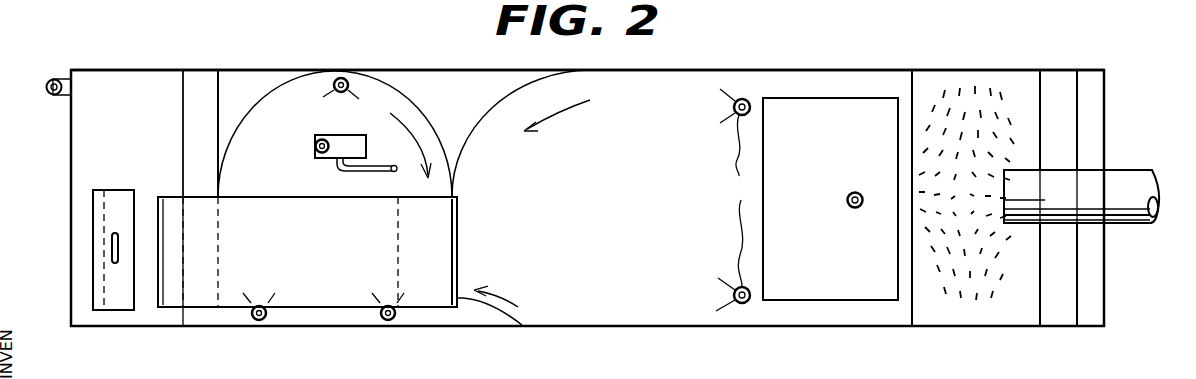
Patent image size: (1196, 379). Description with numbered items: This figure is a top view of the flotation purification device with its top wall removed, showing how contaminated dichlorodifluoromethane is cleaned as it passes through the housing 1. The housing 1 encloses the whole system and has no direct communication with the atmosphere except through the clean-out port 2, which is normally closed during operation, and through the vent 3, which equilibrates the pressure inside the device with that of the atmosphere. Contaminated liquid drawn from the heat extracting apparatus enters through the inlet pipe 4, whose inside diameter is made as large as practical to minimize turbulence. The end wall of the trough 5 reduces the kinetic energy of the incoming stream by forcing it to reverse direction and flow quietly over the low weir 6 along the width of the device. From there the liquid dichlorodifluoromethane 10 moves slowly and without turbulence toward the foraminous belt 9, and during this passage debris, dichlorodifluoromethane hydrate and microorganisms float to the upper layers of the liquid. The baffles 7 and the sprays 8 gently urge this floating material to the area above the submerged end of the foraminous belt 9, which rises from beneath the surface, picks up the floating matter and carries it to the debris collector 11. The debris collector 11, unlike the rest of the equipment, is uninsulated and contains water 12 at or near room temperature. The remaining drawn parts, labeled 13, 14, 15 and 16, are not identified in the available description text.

The housing 1 is at (636, 326).
The clean-out port 2 is at (121, 294).
The vent 3 is at (860, 196).
The inlet pipe 4 is at (1111, 207).
The trough 5 is at (976, 122).
The weir 6 is at (1040, 89).
The baffles 7 is at (503, 106).
The sprays 8 is at (258, 320).
The foraminous belt 9 is at (319, 259).
The liquid dichlorodifluoromethane 10 is at (598, 206).
The debris collector 11 is at (138, 70).
The water 12 is at (135, 161).
The box 13 is at (842, 169).
The roller 14 is at (45, 83).
The nozzle box 15 is at (344, 137).
The roller 16 is at (316, 147).